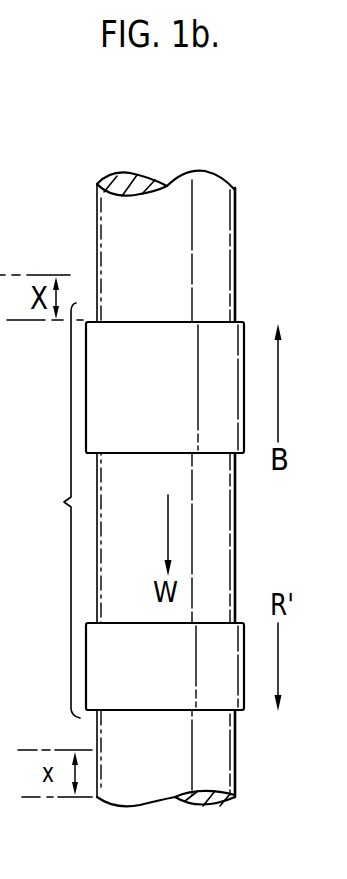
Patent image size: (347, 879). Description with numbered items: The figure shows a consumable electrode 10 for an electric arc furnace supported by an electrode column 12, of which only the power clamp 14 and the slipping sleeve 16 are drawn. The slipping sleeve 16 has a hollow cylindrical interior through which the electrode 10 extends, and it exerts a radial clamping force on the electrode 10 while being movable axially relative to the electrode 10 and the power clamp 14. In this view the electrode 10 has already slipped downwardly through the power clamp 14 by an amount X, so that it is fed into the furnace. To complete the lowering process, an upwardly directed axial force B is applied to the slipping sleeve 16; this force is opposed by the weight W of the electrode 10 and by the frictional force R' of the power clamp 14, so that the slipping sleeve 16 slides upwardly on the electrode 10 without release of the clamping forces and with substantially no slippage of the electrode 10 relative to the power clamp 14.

The consumable electrode 10 is at (118, 228).
The electrode column 12 is at (56, 510).
The power clamp 14 is at (179, 681).
The slipping sleeve 16 is at (181, 397).